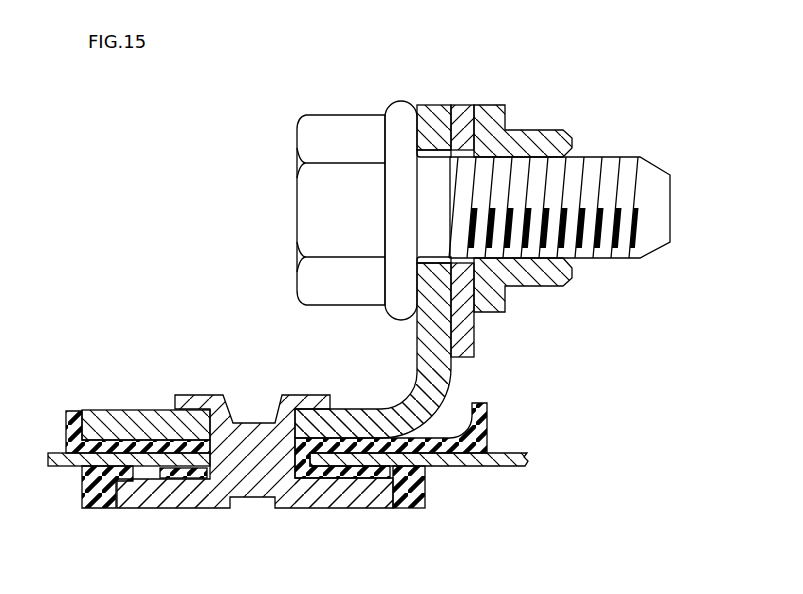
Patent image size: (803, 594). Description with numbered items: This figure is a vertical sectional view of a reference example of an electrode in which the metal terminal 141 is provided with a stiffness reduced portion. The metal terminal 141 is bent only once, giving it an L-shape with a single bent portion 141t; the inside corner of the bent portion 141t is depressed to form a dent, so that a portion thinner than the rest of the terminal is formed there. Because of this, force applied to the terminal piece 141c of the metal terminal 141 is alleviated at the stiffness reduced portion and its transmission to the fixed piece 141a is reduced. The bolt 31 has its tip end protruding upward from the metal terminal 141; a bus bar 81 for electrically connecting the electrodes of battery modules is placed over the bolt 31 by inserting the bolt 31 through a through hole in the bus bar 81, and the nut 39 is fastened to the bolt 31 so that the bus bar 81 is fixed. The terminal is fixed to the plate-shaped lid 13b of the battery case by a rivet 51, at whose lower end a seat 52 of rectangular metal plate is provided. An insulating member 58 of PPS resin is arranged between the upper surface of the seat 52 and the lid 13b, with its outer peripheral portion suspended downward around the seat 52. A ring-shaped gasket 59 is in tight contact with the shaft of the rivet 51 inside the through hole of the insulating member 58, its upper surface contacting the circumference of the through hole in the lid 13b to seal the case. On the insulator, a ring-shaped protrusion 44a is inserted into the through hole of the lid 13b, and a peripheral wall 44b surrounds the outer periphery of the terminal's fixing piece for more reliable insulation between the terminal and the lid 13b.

The bolt 31 is at (603, 158).
The nut 39 is at (538, 140).
The bus bar 81 is at (465, 117).
The metal terminal 141 is at (433, 117).
The fixed piece 141a is at (138, 422).
The terminal piece 141c is at (433, 342).
The bent portion 141t is at (413, 397).
The rivet 51 is at (252, 430).
The seat 52 is at (147, 500).
The insulating member 58 is at (104, 497).
The gasket 59 is at (193, 473).
The ring-shaped protrusion 44a is at (302, 460).
The peripheral wall 44b is at (72, 420).
The lid 13b is at (500, 458).